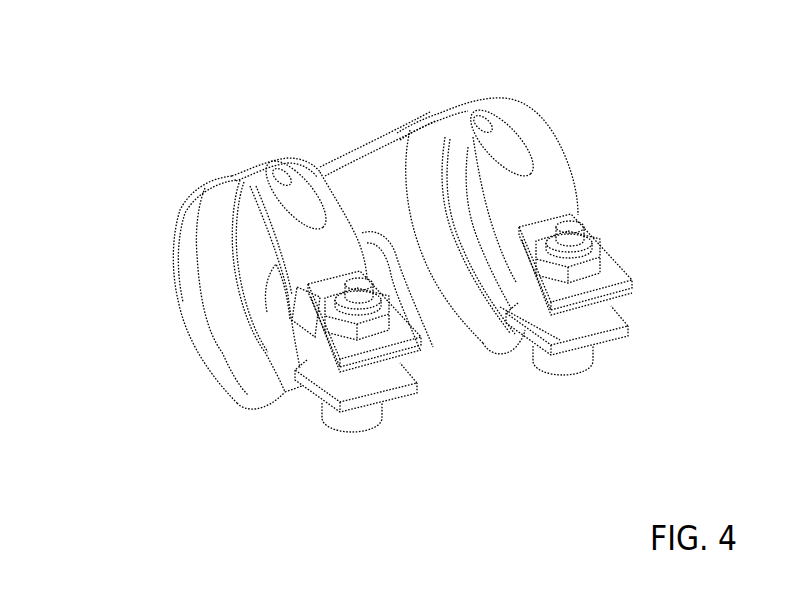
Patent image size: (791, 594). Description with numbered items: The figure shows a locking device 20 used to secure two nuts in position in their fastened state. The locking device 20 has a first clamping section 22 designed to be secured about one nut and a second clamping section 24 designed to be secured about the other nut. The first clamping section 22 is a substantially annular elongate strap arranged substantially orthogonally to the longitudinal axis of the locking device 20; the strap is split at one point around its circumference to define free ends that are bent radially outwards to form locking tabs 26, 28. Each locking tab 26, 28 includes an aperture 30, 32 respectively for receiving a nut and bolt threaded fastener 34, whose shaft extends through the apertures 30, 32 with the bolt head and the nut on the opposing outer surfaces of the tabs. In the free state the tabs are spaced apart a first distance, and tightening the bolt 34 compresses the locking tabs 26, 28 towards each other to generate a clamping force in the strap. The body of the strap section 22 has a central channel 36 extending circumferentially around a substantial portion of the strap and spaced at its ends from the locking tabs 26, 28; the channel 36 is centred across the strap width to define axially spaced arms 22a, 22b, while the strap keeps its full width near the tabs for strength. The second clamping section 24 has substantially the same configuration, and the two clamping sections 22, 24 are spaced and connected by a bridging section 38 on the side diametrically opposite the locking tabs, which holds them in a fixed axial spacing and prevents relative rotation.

The locking device 20 is at (373, 125).
The first clamping section 22 is at (232, 180).
The strap arm 22a is at (190, 255).
The strap arm 22b is at (305, 170).
The second clamping section 24 is at (547, 160).
The locking tab 26 is at (617, 327).
The locking tab 28 is at (633, 282).
The aperture 30 is at (373, 370).
The aperture 32 is at (328, 347).
The nut and bolt threaded fastener 34 is at (362, 418).
The central channel 36 is at (260, 167).
The bridging section 38 is at (385, 170).